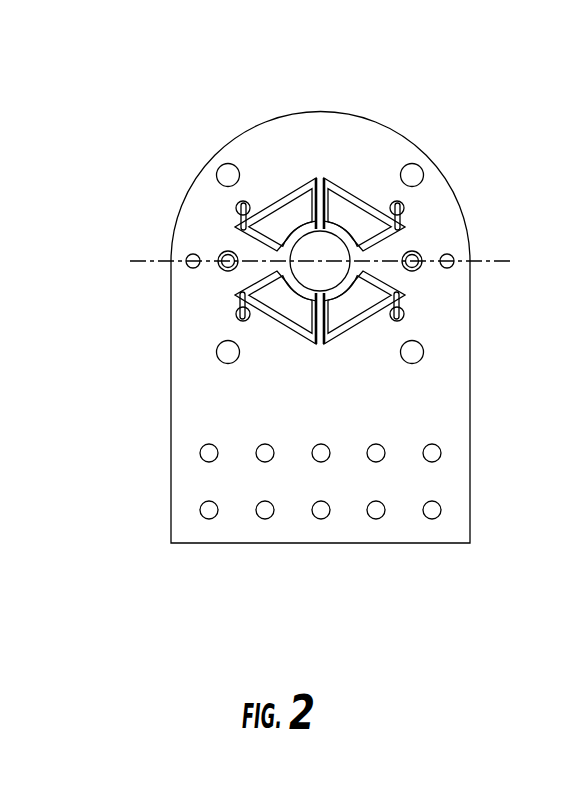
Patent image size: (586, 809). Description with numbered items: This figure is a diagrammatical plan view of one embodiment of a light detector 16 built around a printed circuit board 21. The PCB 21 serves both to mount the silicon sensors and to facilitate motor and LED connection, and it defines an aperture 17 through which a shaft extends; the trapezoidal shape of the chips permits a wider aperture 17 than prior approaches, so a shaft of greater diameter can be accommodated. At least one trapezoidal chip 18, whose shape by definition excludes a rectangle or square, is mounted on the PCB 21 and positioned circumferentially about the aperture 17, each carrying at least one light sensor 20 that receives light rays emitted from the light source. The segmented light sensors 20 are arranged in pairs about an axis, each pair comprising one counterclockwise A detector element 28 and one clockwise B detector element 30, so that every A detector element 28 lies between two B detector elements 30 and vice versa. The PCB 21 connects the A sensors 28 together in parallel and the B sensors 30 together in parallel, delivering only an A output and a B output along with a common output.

The light detector 16 is at (148, 112).
The printed circuit board 21 is at (270, 145).
The aperture 17 is at (320, 257).
The light sensor 20 is at (340, 207).
The A detector element 28 is at (362, 333).
The B detector element 30 is at (360, 197).
The trapezoidal chip 18 is at (384, 204).